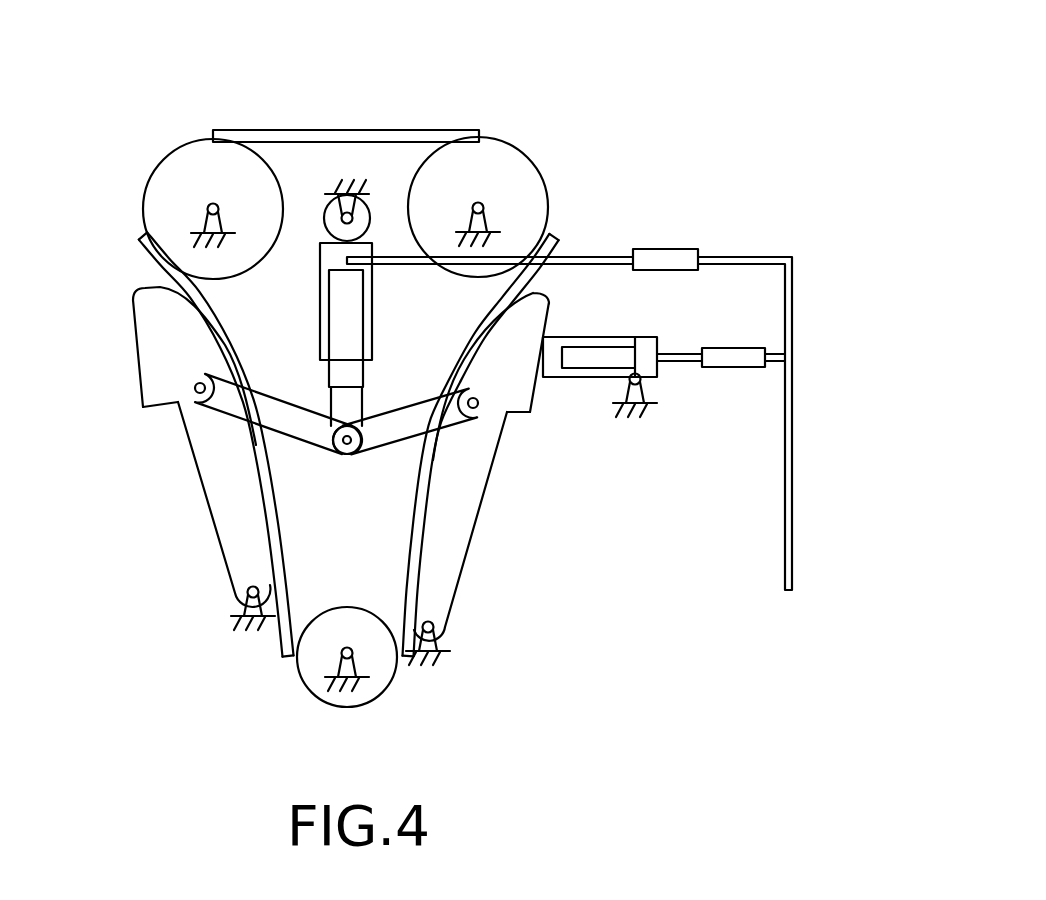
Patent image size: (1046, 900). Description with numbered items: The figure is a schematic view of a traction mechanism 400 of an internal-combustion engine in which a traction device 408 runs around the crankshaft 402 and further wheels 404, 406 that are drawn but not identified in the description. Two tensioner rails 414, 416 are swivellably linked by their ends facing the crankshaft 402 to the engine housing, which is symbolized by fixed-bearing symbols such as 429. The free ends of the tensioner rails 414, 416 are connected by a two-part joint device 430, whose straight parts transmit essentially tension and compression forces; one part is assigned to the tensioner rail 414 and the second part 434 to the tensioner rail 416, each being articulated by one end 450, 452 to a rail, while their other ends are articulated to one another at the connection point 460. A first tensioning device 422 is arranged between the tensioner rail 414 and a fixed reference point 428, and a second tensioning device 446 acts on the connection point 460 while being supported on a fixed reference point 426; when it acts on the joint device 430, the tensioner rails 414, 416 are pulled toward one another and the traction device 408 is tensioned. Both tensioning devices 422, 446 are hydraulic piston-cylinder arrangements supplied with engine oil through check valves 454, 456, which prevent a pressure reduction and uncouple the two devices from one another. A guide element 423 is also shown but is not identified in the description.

The traction mechanism 400 is at (620, 152).
The crankshaft 402 is at (308, 652).
The right upper roller 404 is at (485, 188).
The left upper roller 406 is at (192, 185).
The traction device 408 is at (340, 128).
The tensioner rail 414 is at (445, 560).
The tensioner rail 416 is at (238, 518).
The first tensioning device 422 is at (607, 356).
The right guide member 423 is at (437, 413).
The fixed reference point 426 is at (355, 188).
The fixed reference point 428 is at (655, 402).
The fixed-bearing symbol 429 is at (240, 623).
The two-part joint device 430 is at (326, 474).
The second part of the joint device 434 is at (253, 410).
The second tensioning device 446 is at (340, 318).
The end of the first joint part 450 is at (228, 396).
The end of the second joint part 452 is at (481, 411).
The check valve 454 is at (665, 249).
The check valve 456 is at (740, 348).
The connection point 460 is at (352, 450).